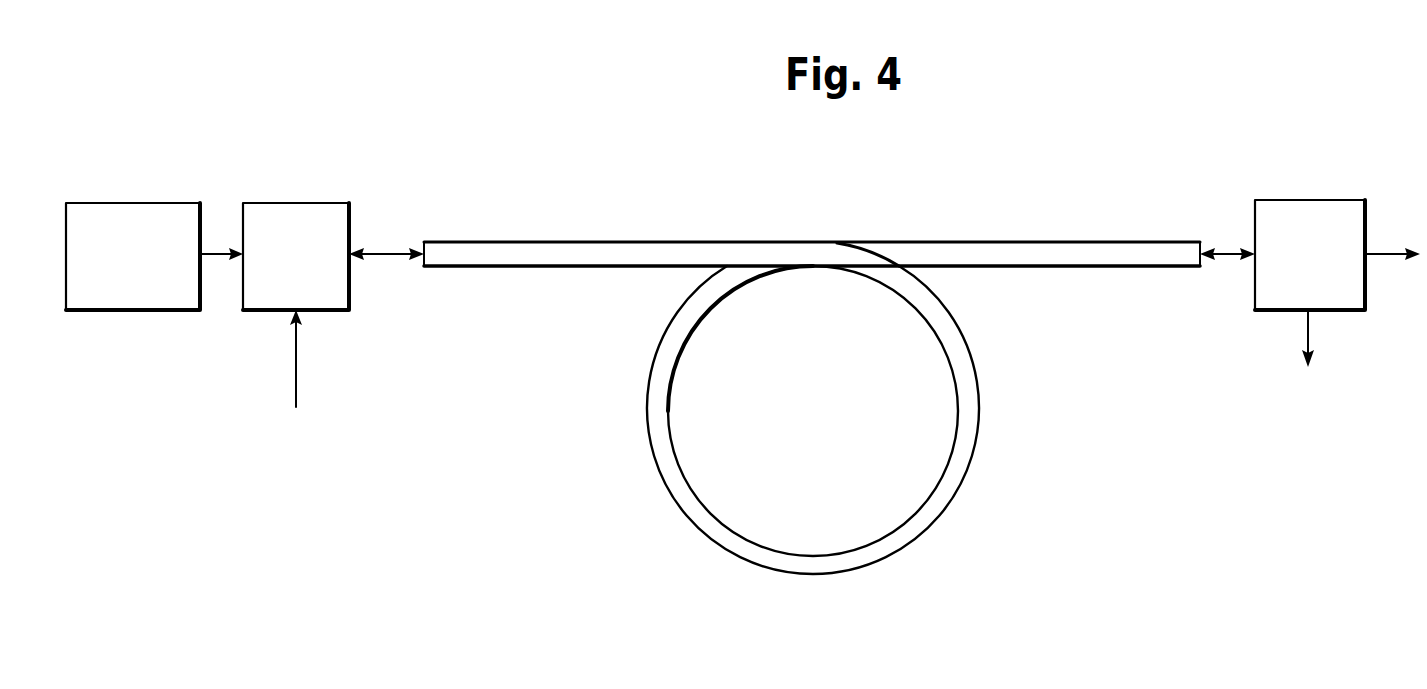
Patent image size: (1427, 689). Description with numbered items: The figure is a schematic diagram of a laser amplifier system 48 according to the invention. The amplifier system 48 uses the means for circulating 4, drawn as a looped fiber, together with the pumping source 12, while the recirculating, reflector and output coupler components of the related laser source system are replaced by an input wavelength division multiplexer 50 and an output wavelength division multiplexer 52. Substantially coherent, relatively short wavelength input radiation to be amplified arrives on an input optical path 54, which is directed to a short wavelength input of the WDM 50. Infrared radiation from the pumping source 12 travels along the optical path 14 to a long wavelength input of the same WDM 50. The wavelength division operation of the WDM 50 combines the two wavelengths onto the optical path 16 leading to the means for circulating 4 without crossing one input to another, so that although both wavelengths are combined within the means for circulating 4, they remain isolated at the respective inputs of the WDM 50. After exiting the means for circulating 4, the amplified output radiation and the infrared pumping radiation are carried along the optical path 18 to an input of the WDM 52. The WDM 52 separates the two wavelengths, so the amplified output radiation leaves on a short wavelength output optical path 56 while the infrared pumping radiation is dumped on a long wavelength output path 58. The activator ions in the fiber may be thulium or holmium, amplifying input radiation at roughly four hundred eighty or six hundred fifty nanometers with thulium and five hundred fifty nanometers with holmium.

The means for circulating 4 is at (950, 485).
The pumping source 12 is at (128, 217).
The optical path 14 is at (213, 254).
The optical path 16 is at (390, 254).
The optical path 18 is at (1228, 257).
The laser amplifier system 48 is at (1092, 152).
The input wavelength division multiplexer 50 is at (305, 217).
The output wavelength division multiplexer 52 is at (1308, 220).
The input optical path 54 is at (296, 383).
The short wavelength output optical path 56 is at (1380, 257).
The long wavelength output path 58 is at (1308, 327).